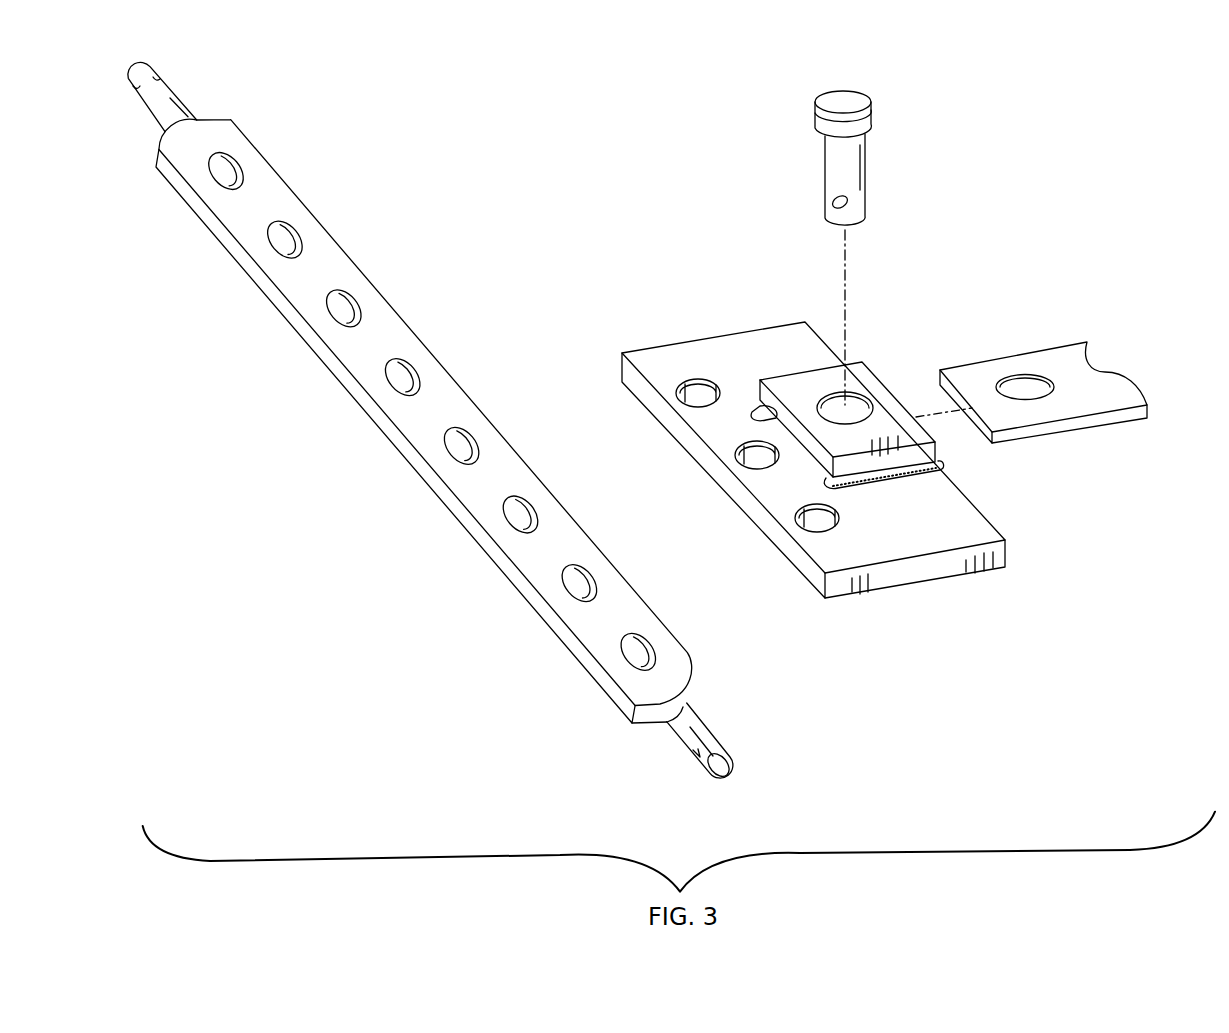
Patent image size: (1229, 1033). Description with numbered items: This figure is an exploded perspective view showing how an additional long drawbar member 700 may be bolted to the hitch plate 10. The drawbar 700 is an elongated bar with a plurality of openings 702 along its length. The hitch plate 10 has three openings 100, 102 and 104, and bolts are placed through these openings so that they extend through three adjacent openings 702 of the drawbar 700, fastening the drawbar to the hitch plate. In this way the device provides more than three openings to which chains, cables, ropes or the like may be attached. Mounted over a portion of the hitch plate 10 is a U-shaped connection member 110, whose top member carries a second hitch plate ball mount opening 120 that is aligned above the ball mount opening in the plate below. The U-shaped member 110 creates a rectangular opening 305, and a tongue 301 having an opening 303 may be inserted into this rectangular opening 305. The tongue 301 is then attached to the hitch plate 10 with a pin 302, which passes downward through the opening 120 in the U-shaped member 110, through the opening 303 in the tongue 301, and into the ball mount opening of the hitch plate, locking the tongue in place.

The hitch plate 10 is at (835, 470).
The opening 100 is at (789, 460).
The opening 102 is at (757, 460).
The opening 104 is at (677, 388).
The U-shaped connection member 110 is at (839, 391).
The second hitch plate ball mount opening 120 is at (860, 408).
The tongue 301 is at (1069, 364).
The pin 302 is at (812, 100).
The opening 303 is at (1028, 387).
The rectangular opening 305 is at (790, 428).
The long drawbar member 700 is at (260, 180).
The openings 702 is at (343, 310).